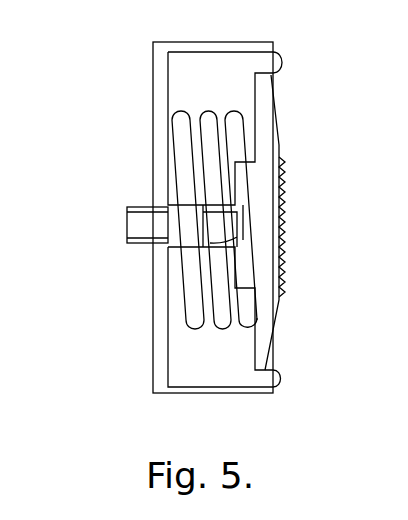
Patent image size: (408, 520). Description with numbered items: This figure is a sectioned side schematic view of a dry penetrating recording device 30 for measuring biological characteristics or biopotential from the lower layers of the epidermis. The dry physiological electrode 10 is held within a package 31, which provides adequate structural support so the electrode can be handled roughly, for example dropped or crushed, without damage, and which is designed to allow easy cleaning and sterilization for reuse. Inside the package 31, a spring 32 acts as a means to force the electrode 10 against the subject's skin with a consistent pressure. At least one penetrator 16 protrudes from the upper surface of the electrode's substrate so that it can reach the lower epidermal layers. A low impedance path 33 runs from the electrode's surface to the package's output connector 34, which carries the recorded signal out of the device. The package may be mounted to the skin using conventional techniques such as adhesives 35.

The dry penetrating recording device 30 is at (122, 84).
The package 31 is at (153, 386).
The spring 32 is at (176, 128).
The low impedance path 33 is at (166, 243).
The output connector 34 is at (127, 230).
The adhesives 35 is at (281, 58).
The dry physiological electrode 10 is at (284, 134).
The penetrators 16 is at (286, 290).